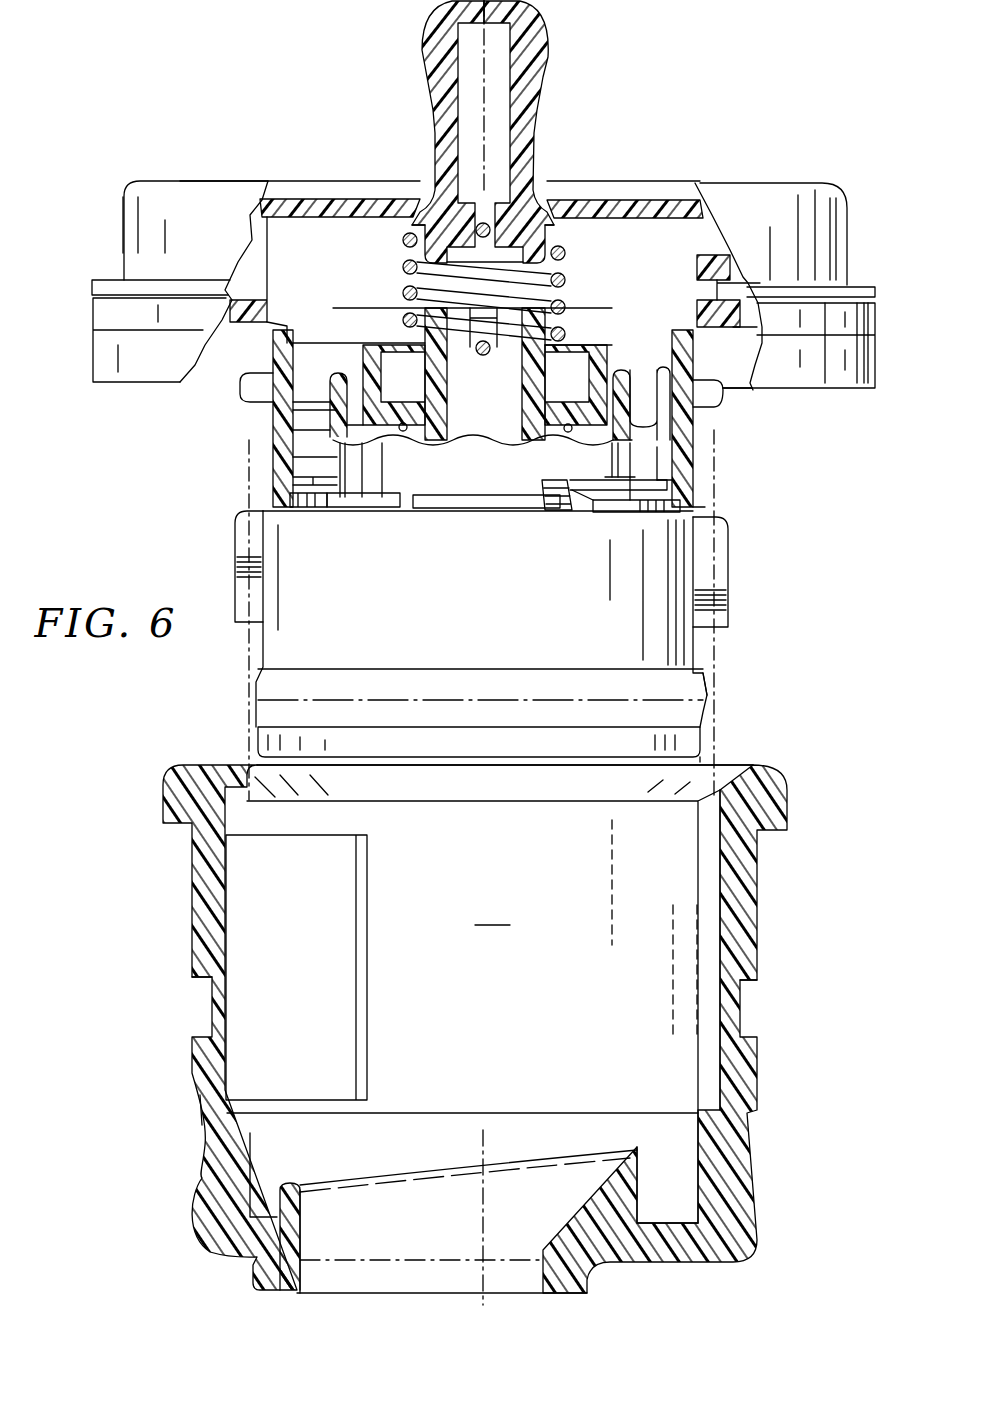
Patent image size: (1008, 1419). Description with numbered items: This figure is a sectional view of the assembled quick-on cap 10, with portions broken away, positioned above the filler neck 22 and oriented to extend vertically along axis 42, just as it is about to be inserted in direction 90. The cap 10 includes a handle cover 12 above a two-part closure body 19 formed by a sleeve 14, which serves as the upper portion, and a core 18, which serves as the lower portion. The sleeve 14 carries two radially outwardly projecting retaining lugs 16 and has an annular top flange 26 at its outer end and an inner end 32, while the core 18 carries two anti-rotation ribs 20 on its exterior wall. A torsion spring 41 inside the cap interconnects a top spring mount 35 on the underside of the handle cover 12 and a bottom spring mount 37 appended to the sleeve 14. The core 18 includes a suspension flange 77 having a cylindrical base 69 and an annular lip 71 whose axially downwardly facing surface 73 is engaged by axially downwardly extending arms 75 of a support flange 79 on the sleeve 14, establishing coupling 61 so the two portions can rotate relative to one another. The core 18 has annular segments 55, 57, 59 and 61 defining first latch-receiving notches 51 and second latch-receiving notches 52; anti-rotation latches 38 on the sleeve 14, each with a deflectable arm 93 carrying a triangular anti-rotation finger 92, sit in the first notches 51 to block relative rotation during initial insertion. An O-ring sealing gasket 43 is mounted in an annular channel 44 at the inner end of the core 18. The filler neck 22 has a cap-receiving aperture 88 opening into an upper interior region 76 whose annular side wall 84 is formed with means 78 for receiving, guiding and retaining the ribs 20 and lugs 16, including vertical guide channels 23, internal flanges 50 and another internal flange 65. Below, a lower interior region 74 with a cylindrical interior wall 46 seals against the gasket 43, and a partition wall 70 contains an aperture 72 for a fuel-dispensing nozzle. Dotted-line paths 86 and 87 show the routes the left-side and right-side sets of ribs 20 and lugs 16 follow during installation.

The quick-on cap 10 is at (283, 100).
The handle cover 12 is at (745, 172).
The sleeve 14 is at (268, 449).
The retaining lugs 16 is at (240, 390).
The core 18 is at (245, 630).
The closure body 19 is at (208, 513).
The anti-rotation ribs 20 is at (252, 530).
The filler neck 22 is at (187, 1082).
The vertical guide channels 23 is at (220, 885).
The annular top flange 26 is at (752, 341).
The inner end 32 is at (722, 509).
The top spring mount 35 is at (537, 252).
The bottom spring mount 37 is at (540, 380).
The anti-rotation latches 38 is at (572, 474).
The torsion spring 41 is at (570, 278).
The axis 42 is at (487, 103).
The O-ring sealing gasket 43 is at (708, 690).
The annular channel 44 is at (702, 716).
The cylindrical interior wall 46 is at (250, 1150).
The internal flanges 50 is at (360, 810).
The first latch-receiving notches 51 is at (522, 504).
The second latch-receiving notches 52 is at (396, 510).
The segment 55 is at (338, 514).
The segment 57 is at (473, 510).
The segment 59 is at (630, 514).
The segment 61 is at (634, 362).
The internal flange 65 is at (347, 1018).
The cylindrical base 69 is at (300, 427).
The partition wall 70 is at (272, 1218).
The annular lip 71 is at (340, 390).
The aperture 72 is at (440, 1208).
The axially downwardly facing surface 73 is at (290, 408).
The lower interior region 74 is at (694, 1153).
The arms 75 is at (660, 392).
The upper interior region 76 is at (662, 905).
The suspension flange 77 is at (327, 372).
The means for receiving, guiding, and retaining 78 is at (432, 838).
The support flange 79 is at (650, 446).
The annular side wall 84 is at (492, 914).
The dotted-line path 86 is at (249, 470).
The dotted-line path 87 is at (716, 462).
The cap-receiving aperture 88 is at (672, 788).
The direction 90 is at (483, 592).
The anti-rotation finger 92 is at (592, 505).
The deflectable arm 93 is at (612, 480).